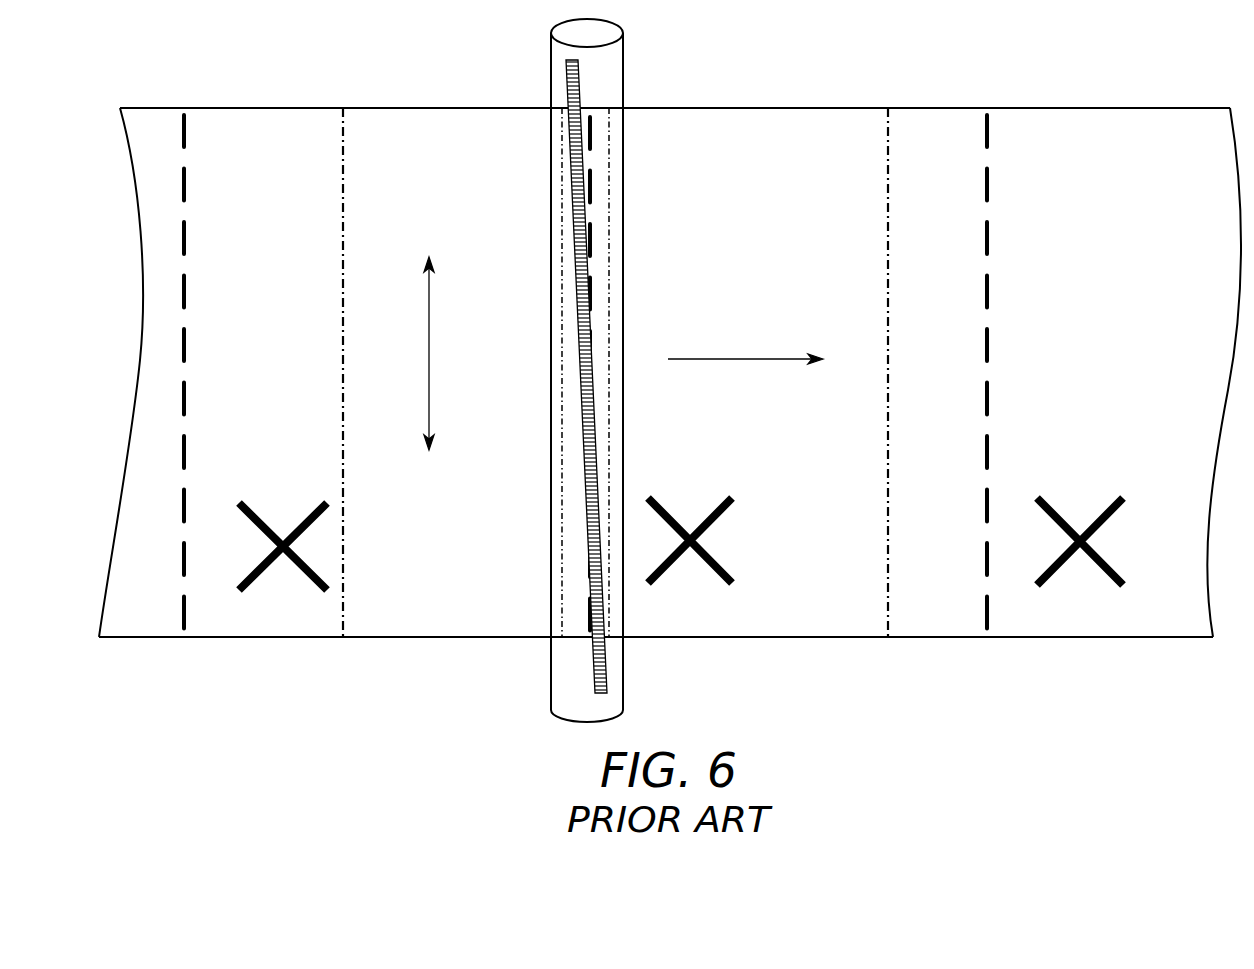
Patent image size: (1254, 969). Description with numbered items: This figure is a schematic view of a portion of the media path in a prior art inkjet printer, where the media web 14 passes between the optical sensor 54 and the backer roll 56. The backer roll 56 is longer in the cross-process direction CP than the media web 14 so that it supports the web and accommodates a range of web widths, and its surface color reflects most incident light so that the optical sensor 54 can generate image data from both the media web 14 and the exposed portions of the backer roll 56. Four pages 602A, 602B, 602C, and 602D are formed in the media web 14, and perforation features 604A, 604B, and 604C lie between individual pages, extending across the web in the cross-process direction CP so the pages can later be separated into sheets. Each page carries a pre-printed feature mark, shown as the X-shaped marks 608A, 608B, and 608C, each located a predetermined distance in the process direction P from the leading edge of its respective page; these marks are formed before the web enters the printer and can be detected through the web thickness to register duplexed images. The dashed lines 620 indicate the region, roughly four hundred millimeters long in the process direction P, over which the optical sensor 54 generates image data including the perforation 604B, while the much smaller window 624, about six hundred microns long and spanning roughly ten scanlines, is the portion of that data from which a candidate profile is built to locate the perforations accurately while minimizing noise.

The media web 14 is at (372, 107).
The optical sensor 54 is at (580, 82).
The backer roll 56 is at (551, 63).
The page 602A is at (115, 638).
The page 602B is at (245, 638).
The page 602C is at (762, 638).
The page 602D is at (1095, 638).
The perforation feature 604A is at (185, 455).
The perforation feature 604B is at (592, 188).
The perforation feature 604C is at (990, 403).
The feature mark 608A is at (323, 500).
The feature mark 608B is at (723, 517).
The feature mark 608C is at (1117, 512).
The region 620 is at (343, 238).
The window 624 is at (562, 240).
The cross-process direction CP is at (429, 357).
The process direction P is at (725, 359).